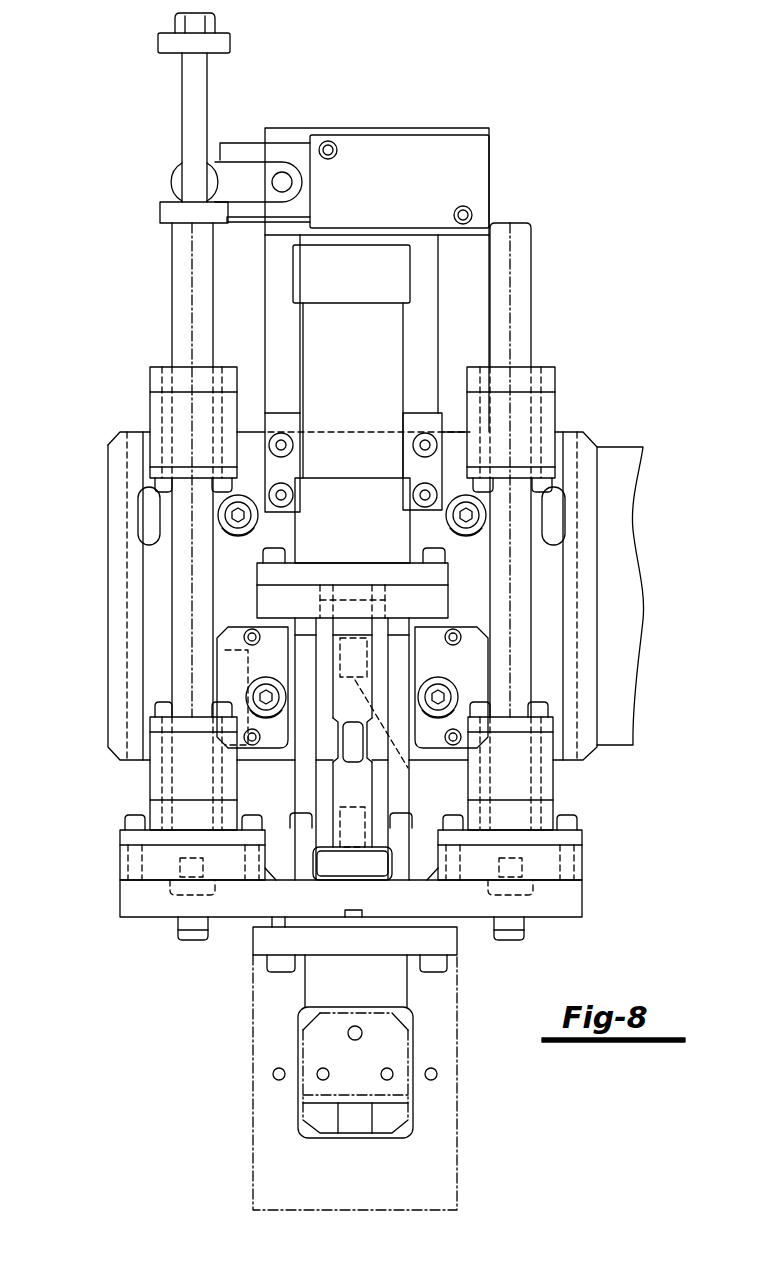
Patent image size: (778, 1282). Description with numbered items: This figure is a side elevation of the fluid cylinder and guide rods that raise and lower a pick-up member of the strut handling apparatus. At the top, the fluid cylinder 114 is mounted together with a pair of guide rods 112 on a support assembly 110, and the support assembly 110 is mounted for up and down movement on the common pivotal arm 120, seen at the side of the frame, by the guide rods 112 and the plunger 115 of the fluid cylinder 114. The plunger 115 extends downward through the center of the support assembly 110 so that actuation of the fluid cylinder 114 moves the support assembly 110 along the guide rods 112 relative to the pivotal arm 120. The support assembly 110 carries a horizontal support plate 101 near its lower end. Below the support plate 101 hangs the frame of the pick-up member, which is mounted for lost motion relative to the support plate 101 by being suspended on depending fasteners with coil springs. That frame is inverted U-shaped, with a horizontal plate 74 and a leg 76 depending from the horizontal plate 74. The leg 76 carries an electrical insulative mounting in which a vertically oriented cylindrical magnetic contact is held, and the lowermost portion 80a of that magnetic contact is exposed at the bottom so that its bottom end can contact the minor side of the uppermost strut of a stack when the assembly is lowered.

The horizontal plate 74 is at (272, 943).
The leg 76 is at (267, 1058).
The lowermost portion of magnetic contact 80a is at (355, 1112).
The horizontal support plate 101 is at (562, 910).
The support assembly 110 is at (592, 770).
The guide rod 112 is at (190, 615).
The fluid cylinder 114 is at (387, 368).
The plunger 115 is at (358, 792).
The pivotal arm 120 is at (610, 458).